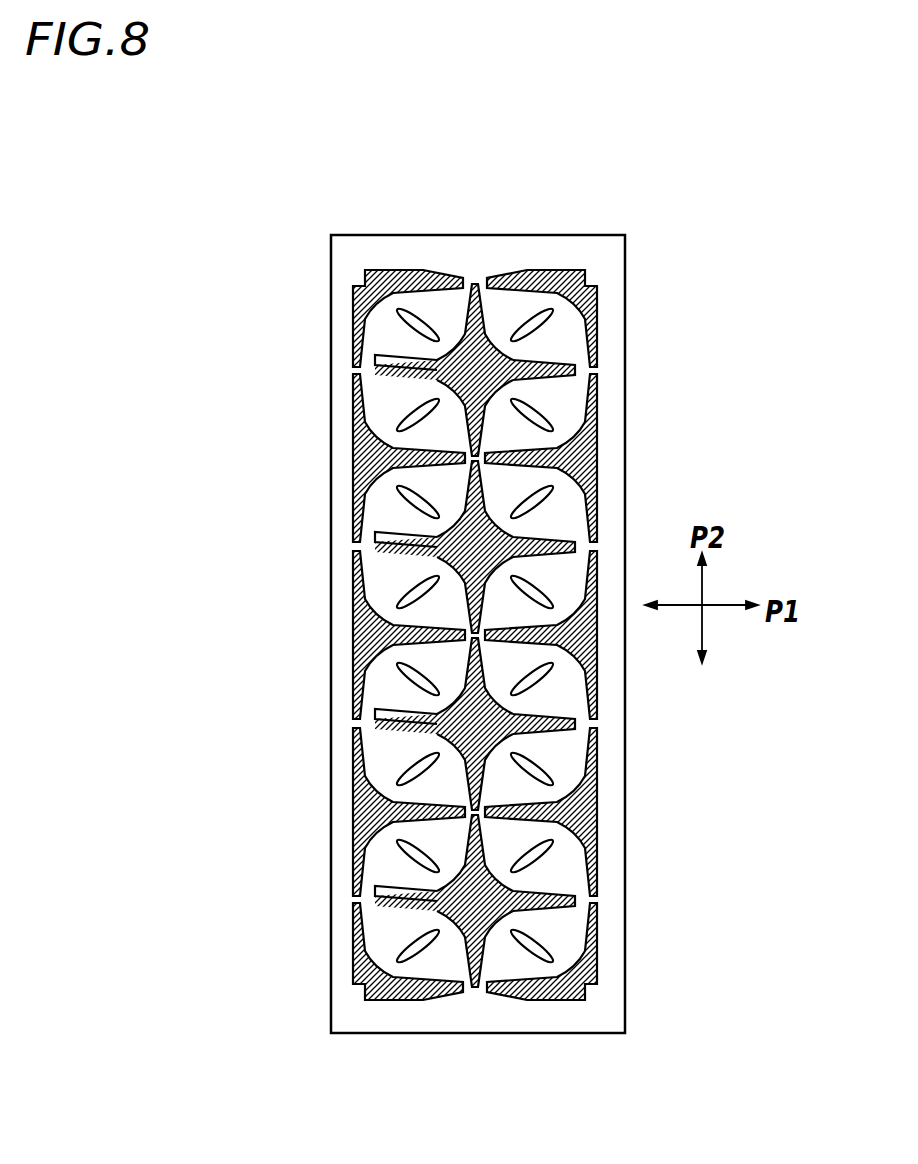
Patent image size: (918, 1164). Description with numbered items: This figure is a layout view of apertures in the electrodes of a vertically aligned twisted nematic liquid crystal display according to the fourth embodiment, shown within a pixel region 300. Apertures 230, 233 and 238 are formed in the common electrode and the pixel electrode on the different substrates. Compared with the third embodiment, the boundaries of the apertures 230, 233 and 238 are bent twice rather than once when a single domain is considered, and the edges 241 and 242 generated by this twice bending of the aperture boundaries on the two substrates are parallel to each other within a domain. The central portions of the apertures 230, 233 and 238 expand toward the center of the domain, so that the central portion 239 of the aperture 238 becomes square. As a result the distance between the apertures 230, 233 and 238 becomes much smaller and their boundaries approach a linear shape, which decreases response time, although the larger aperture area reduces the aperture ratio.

The liquid crystal display panel pixel 300 is at (474, 1034).
The central portion of the aperture 239 is at (480, 358).
The aperture 238 is at (575, 368).
The edge 242 is at (447, 567).
The aperture 233 is at (354, 453).
The edge 241 is at (354, 633).
The aperture 230 is at (603, 453).